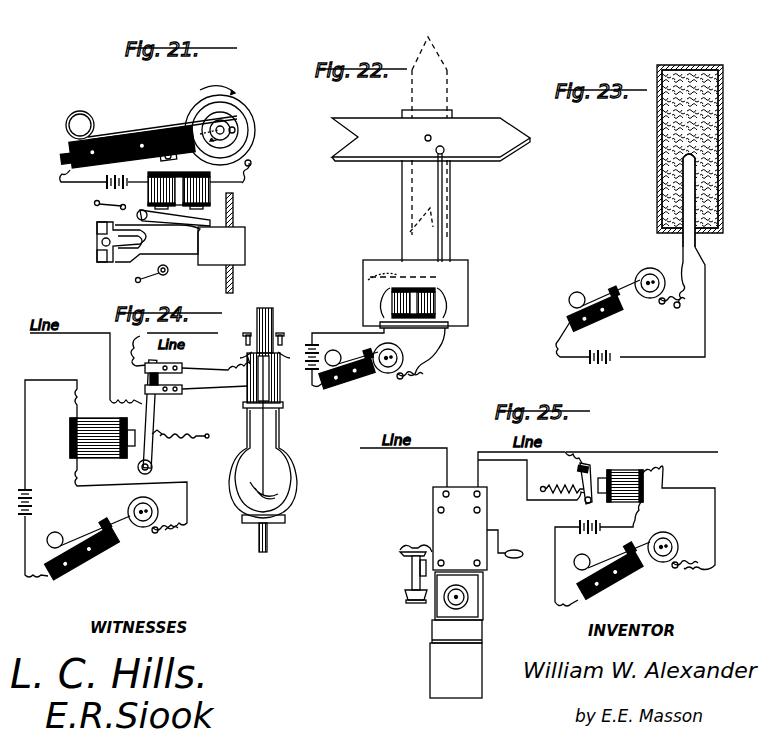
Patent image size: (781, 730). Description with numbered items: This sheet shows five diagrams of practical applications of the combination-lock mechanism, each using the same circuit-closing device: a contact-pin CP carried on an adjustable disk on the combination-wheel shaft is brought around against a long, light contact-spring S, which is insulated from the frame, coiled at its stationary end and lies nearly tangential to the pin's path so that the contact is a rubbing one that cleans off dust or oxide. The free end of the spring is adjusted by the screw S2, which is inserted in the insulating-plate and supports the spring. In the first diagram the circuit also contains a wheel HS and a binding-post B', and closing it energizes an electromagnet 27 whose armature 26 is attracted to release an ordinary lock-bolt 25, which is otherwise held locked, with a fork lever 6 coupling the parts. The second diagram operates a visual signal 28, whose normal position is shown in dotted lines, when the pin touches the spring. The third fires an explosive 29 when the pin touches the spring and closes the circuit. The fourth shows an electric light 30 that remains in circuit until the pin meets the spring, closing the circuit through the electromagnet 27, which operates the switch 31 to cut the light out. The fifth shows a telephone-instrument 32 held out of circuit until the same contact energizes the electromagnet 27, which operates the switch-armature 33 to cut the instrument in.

In FIG. 21, the contact-spring S is at (170, 124).
In FIG. 22, the contact-spring S is at (342, 362).
In FIG. 23, the contact-spring S is at (594, 299).
In FIG. 24, the contact-spring S is at (70, 540).
In FIG. 25, the contact-spring S is at (598, 564).
In FIG. 22, the screw S2 is at (370, 372).
In FIG. 23, the screw S2 is at (601, 308).
In FIG. 24, the screw S2 is at (88, 549).
In FIG. 25, the screw S2 is at (613, 570).
In FIG. 21, the contact-pin CP is at (233, 130).
In FIG. 22, the contact-pin CP is at (399, 361).
In FIG. 23, the contact-pin CP is at (660, 286).
In FIG. 24, the contact-pin CP is at (150, 512).
In FIG. 25, the contact-pin CP is at (672, 546).
In FIG. 21, the hand shaft wheel HS is at (225, 125).
In FIG. 21, the binding post B' is at (259, 166).
In FIG. 21, the electromagnet 27 is at (180, 190).
In FIG. 24, the electromagnet 27 is at (102, 438).
In FIG. 25, the electromagnet 27 is at (620, 486).
In FIG. 21, the armature 26 is at (173, 217).
In FIG. 21, the lock-bolt 25 is at (221, 243).
In FIG. 21, the fork lever 6 is at (167, 266).
In FIG. 22, the visual signal 28 is at (431, 149).
In FIG. 23, the explosive 29 is at (718, 138).
In FIG. 24, the electric light 30 is at (268, 430).
In FIG. 24, the switch 31 is at (160, 432).
In FIG. 25, the telephone-instrument 32 is at (461, 592).
In FIG. 25, the switch-armature 33 is at (578, 478).